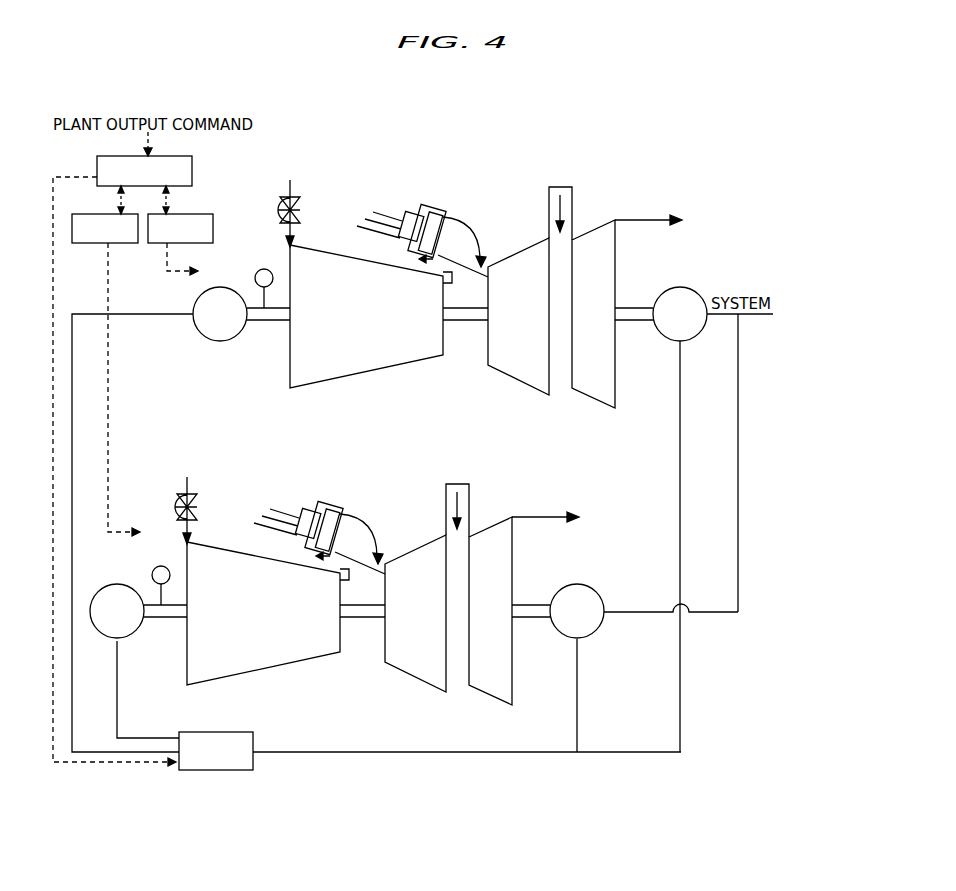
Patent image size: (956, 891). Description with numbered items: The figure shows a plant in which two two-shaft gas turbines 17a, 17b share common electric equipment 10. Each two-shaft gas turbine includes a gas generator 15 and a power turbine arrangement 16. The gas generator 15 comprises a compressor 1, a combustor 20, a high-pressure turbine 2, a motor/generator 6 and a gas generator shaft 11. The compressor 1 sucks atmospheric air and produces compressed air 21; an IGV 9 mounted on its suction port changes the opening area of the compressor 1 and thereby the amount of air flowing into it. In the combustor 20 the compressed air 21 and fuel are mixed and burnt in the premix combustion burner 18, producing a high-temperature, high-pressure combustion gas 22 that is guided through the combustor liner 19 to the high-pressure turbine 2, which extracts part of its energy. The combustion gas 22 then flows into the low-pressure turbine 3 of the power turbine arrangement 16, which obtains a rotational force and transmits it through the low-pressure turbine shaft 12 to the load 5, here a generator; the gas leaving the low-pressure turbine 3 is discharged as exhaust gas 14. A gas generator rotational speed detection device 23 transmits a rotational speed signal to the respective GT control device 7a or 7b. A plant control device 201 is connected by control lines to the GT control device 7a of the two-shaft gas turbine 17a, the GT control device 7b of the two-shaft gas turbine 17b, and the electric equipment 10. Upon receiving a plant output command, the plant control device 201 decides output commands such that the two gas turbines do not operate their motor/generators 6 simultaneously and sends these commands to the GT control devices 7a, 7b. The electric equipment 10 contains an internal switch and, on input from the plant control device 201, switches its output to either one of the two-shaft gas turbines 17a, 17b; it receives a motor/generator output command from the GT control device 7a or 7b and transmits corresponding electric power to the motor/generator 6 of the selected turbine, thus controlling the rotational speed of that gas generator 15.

The compressor 1 is at (373, 355).
The high-pressure turbine 2 is at (537, 366).
The low-pressure turbine 3 is at (608, 355).
The load 5 is at (693, 290).
The motor/generator 6 is at (218, 341).
The GT control device 7a is at (197, 214).
The GT control device 7b is at (100, 214).
The IGV (Inlet Guide Vane) 9 is at (300, 211).
The electric equipment 10 is at (247, 760).
The gas generator shaft 11 is at (268, 320).
The low-pressure turbine shaft 12 is at (630, 308).
The exhaust gas 14 is at (683, 214).
The gas generator 15 is at (195, 412).
The power turbine arrangement 16 is at (572, 412).
The two-shaft gas turbine 17a is at (793, 163).
The two-shaft gas turbine 17b is at (660, 765).
The premix combustion burner 18 is at (424, 208).
The combustor liner 19 is at (493, 246).
The combustor 20 is at (400, 165).
The compressed air 21 is at (449, 240).
The combustion gas 22 is at (468, 229).
The gas generator rotational speed detection device 23 is at (257, 272).
The plant control device 201 is at (192, 167).